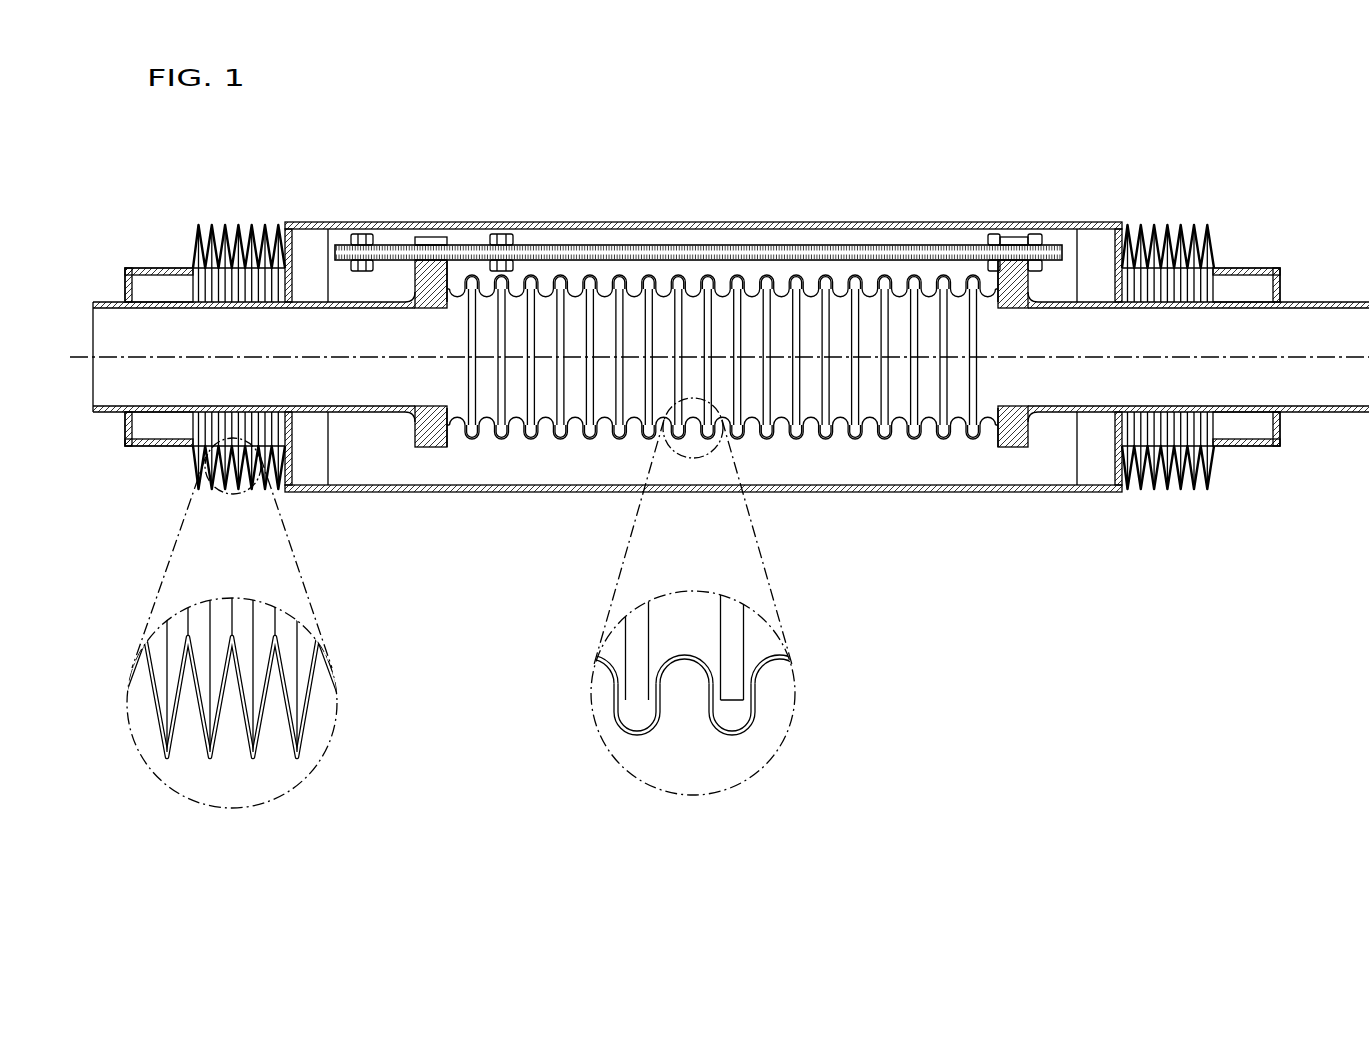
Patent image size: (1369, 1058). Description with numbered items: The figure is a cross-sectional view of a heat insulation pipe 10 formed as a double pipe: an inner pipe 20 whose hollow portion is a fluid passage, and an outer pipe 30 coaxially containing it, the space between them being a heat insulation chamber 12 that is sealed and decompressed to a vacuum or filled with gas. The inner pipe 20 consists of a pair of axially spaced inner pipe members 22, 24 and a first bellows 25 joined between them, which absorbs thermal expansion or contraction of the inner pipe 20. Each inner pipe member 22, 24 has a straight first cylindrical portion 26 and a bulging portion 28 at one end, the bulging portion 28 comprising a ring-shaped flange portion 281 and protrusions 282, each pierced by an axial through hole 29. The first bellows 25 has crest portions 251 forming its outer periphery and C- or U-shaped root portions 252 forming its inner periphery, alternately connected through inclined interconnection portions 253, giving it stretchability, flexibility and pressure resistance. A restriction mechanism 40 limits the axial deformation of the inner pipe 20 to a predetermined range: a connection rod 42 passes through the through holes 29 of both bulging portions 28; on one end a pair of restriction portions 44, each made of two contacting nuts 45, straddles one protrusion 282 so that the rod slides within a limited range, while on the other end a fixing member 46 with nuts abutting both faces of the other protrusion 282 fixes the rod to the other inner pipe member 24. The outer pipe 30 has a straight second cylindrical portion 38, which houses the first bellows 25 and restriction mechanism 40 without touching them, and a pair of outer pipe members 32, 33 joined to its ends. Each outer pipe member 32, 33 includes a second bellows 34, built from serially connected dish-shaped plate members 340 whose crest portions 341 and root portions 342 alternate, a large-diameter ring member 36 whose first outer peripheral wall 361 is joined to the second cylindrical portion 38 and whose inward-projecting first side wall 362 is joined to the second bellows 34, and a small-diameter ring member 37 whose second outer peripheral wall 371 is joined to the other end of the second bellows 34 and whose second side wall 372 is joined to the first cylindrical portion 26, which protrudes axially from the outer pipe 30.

The heat insulation pipe 10 is at (355, 143).
The heat insulation chamber 12 is at (587, 475).
The inner pipe 20 is at (527, 452).
The inner pipe member 22 is at (118, 300).
The inner pipe member 24 is at (1306, 300).
The first bellows 25 is at (874, 445).
The crest portion 251 is at (640, 735).
The root portion 252 is at (684, 656).
The interconnection portion 253 is at (752, 698).
The first cylindrical portion 26 is at (349, 414).
The bulging portion 28 is at (431, 450).
The flange portion 281 is at (445, 442).
The protrusion 282 is at (428, 237).
The through hole 29 is at (434, 254).
The outer pipe 30 is at (550, 494).
The outer pipe member 32 is at (164, 266).
The outer pipe member 33 is at (1232, 266).
The second bellows 34 is at (240, 495).
The plate member 340 is at (243, 820).
The crest portion 341 is at (299, 760).
The root portion 342 is at (234, 634).
The large-diameter ring member 36 is at (309, 494).
The first outer peripheral wall 361 is at (322, 492).
The first side wall 362 is at (293, 467).
The small-diameter ring member 37 is at (142, 447).
The second outer peripheral wall 371 is at (168, 447).
The second side wall 372 is at (126, 420).
The second cylindrical portion 38 is at (702, 226).
The restriction mechanism 40 is at (775, 244).
The connection rod 42 is at (612, 248).
The restriction portion 44 is at (362, 233).
The nut 45 is at (368, 272).
The fixing member 46 is at (990, 236).